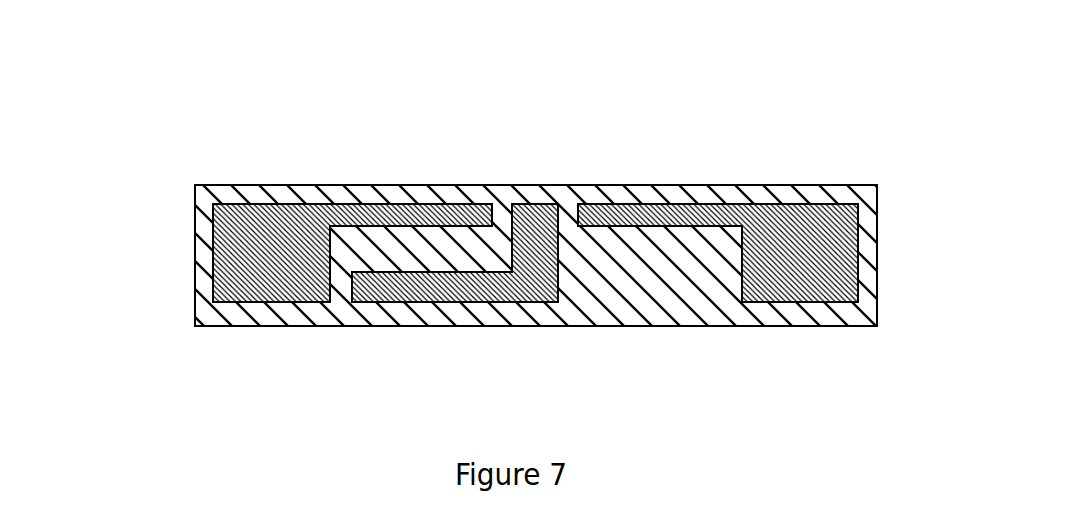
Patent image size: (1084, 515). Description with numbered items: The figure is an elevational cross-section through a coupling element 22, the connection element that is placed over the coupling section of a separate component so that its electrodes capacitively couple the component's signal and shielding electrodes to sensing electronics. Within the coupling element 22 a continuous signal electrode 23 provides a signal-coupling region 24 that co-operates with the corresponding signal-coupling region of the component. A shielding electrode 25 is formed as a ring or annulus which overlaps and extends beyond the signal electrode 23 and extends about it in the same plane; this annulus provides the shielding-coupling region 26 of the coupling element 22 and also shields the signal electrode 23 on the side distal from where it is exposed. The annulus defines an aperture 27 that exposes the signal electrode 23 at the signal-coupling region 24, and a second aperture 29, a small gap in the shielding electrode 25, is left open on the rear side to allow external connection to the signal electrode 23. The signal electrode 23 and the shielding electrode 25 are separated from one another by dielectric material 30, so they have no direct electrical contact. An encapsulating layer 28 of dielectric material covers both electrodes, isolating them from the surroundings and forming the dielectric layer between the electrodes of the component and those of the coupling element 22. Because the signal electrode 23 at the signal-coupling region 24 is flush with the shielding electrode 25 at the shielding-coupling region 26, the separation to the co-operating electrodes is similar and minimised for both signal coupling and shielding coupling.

The coupling element 22 is at (498, 265).
The signal electrode 23 is at (690, 285).
The signal-coupling region 24 is at (462, 342).
The shielding electrode layer 25 is at (262, 260).
The shielding-coupling region 26 is at (726, 348).
The aperture 27 is at (548, 358).
The encapsulating layer 28 is at (823, 318).
The aperture 29 is at (572, 196).
The dielectric material 30 is at (687, 245).